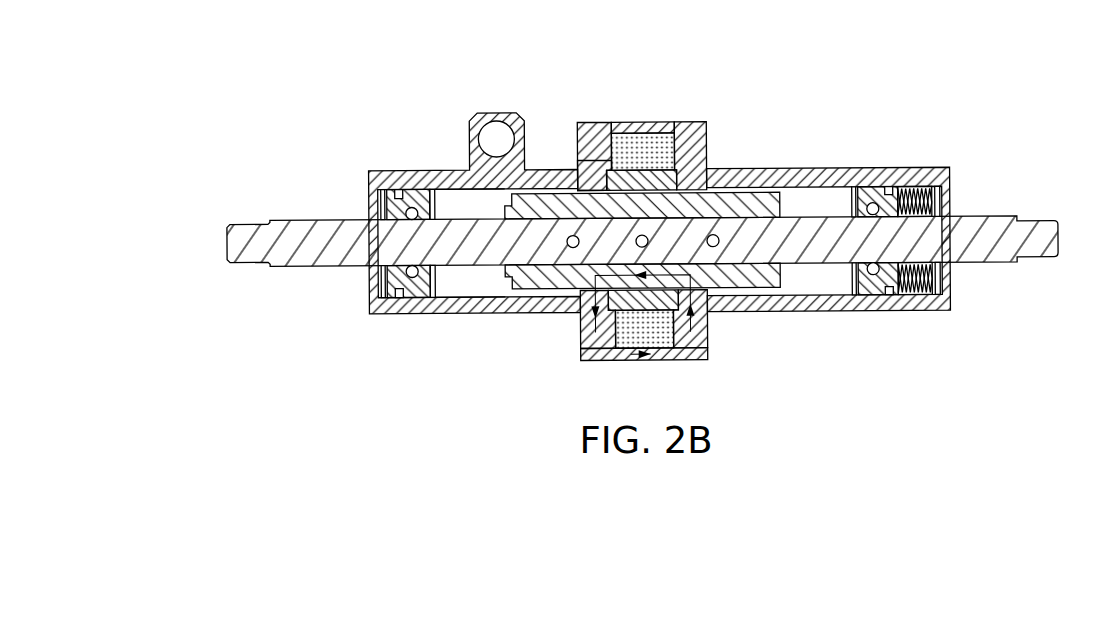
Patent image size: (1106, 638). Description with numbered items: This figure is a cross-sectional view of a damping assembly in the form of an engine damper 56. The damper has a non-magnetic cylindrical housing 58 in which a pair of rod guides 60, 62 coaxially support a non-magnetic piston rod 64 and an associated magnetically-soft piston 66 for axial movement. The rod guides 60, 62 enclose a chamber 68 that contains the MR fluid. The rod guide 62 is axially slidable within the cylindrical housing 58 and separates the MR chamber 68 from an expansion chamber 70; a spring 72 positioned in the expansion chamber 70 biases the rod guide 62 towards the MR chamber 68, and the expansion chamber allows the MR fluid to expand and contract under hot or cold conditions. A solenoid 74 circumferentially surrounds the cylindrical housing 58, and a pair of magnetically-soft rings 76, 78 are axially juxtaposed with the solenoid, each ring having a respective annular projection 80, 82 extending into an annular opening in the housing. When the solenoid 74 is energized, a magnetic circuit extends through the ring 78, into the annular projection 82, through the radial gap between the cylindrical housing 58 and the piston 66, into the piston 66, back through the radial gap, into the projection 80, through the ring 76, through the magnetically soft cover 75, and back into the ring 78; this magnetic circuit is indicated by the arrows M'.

The engine damper 56 is at (840, 122).
The cylindrical housing 58 is at (632, 150).
The rod guide 60 is at (402, 304).
The rod guide 62 is at (867, 305).
The piston rod 64 is at (313, 228).
The piston 66 is at (765, 197).
The chamber 68 is at (453, 195).
The expansion chamber 70 is at (930, 207).
The spring 72 is at (913, 184).
The solenoid 74 is at (656, 140).
The magnetically soft cover 75 is at (692, 123).
The magnetically-soft ring 76 is at (593, 143).
The magnetically-soft ring 78 is at (706, 354).
The annular projection 80 is at (595, 177).
The annular projection 82 is at (695, 182).
The magnetic circuit arrows M' is at (604, 316).